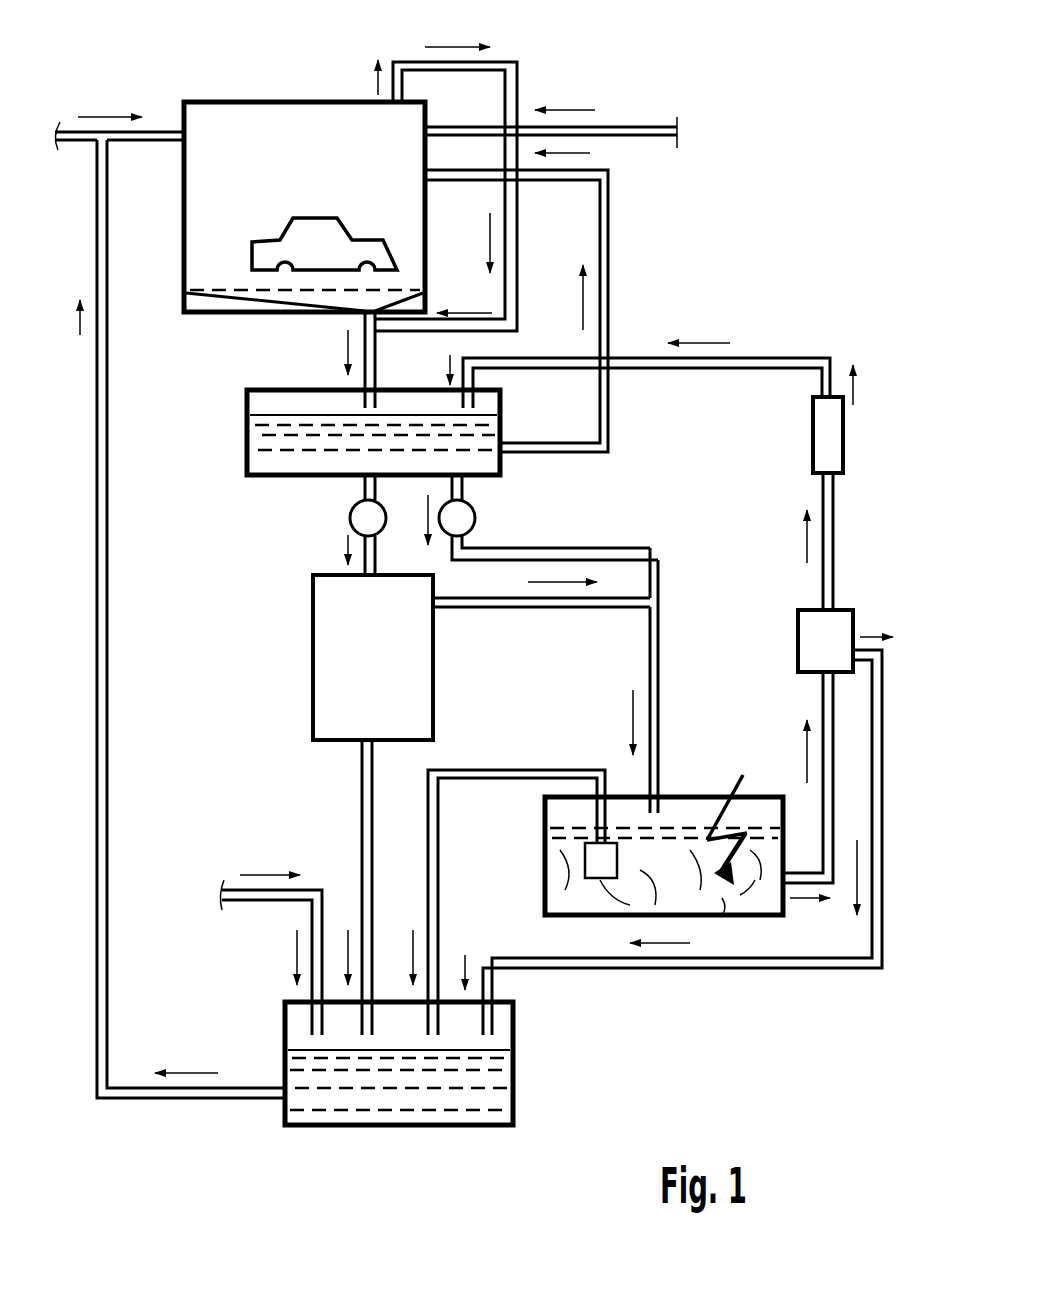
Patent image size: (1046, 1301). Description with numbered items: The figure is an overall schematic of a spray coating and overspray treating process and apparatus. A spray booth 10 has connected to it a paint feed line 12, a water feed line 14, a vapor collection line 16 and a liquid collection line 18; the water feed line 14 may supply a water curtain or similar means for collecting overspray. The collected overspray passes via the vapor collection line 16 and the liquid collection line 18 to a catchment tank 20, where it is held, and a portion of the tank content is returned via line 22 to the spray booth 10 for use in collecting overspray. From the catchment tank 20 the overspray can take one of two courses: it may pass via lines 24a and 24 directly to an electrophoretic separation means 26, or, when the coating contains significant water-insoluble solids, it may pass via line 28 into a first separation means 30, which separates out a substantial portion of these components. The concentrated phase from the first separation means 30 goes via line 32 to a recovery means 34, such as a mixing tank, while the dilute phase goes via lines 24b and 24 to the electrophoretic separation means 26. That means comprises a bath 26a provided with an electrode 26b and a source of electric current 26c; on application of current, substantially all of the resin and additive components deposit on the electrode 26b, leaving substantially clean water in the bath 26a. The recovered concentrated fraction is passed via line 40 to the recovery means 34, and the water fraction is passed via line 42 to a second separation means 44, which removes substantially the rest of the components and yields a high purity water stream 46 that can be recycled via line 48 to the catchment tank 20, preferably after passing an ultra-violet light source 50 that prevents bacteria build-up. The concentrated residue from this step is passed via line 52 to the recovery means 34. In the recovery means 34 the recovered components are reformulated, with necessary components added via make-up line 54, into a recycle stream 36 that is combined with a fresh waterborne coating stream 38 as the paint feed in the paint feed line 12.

The spray booth 10 is at (291, 118).
The paint feed line 12 is at (156, 131).
The water feed line 14 is at (630, 127).
The vapor collection line 16 is at (500, 62).
The liquid collection line 18 is at (365, 318).
The catchment tank 20 is at (247, 437).
The line 22 is at (608, 262).
The line 24 is at (658, 700).
The line 24a is at (625, 548).
The line 24b is at (528, 607).
The electrophoretic separation means 26 is at (766, 830).
The bath 26a is at (725, 900).
The electrode 26b is at (585, 855).
The source of electric current 26c is at (718, 808).
The line 28 is at (366, 490).
The first separation means 30 is at (313, 663).
The line 32 is at (362, 800).
The recovery means 34 is at (518, 1072).
The recycle stream 36 is at (97, 668).
The fresh waterborne coating stream 38 is at (68, 131).
The line 40 is at (430, 920).
The line 42 is at (823, 690).
The second separation means 44 is at (798, 632).
The water stream 46 is at (833, 537).
The line 48 is at (770, 358).
The ultra-violet light source 50 is at (813, 437).
The line 52 is at (688, 968).
The make-up line 54 is at (318, 893).